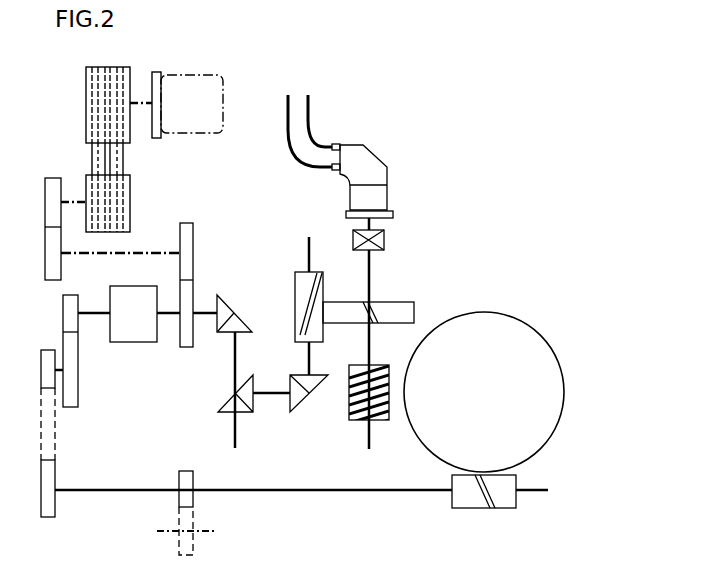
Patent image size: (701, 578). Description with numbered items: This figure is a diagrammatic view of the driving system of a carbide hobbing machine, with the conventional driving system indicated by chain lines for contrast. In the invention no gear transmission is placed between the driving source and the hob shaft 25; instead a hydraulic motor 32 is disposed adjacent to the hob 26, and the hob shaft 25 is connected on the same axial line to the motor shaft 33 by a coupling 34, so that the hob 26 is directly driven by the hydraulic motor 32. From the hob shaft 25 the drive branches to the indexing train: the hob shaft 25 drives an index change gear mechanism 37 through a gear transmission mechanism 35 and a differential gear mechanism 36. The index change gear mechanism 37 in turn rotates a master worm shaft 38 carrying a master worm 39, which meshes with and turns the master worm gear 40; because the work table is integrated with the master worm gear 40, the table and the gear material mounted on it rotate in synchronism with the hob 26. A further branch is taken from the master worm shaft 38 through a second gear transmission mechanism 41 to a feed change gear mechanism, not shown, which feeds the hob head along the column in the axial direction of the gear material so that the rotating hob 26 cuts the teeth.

The hob shaft 25 is at (371, 345).
The hob 26 is at (389, 416).
The hydraulic motor 32 is at (384, 201).
The motor shaft 33 is at (370, 223).
The coupling 34 is at (385, 244).
The gear transmission mechanism 35 is at (294, 305).
The differential gear mechanism 36 is at (137, 345).
The index change gear mechanism 37 is at (40, 375).
The master worm shaft 38 is at (119, 491).
The master worm 39 is at (451, 500).
The master worm gear 40 is at (441, 456).
The gear transmission mechanism 41 is at (193, 500).